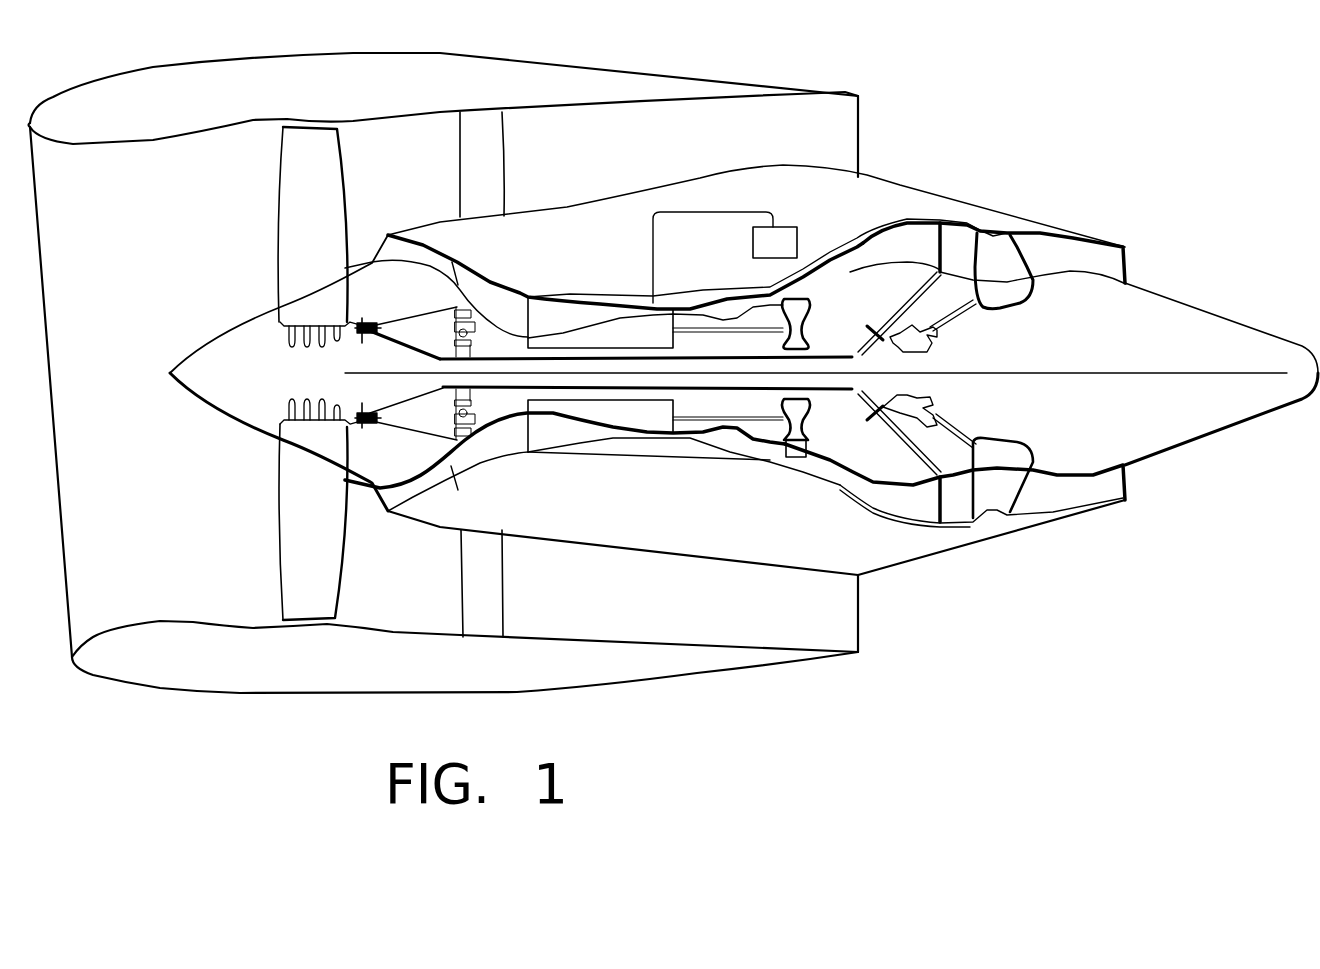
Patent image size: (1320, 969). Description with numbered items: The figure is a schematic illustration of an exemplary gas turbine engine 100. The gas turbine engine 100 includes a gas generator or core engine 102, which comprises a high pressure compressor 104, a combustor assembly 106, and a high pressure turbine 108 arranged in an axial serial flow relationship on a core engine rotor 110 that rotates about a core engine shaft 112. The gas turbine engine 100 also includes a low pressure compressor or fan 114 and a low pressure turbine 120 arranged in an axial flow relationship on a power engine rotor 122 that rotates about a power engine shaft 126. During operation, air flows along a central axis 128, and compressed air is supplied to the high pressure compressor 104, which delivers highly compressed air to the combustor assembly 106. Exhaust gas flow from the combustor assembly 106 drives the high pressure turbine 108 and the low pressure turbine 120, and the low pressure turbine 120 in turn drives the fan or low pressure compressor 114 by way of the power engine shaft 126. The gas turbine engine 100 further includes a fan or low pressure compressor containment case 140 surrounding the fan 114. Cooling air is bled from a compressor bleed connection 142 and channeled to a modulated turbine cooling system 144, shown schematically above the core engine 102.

The gas turbine engine 100 is at (808, 76).
The core engine 102 is at (692, 480).
The high pressure compressor 104 is at (552, 310).
The combustor assembly 106 is at (747, 307).
The high pressure turbine 108 is at (792, 462).
The core engine rotor 110 is at (890, 290).
The core engine shaft 112 is at (710, 329).
The fan 114 is at (294, 546).
The low pressure turbine 120 is at (895, 243).
The power engine rotor 122 is at (392, 338).
The power engine shaft 126 is at (572, 390).
The central axis 128 is at (1022, 375).
The fan or low pressure compressor containment case 140 is at (322, 80).
The compressor bleed connection 142 is at (652, 307).
The modulated turbine cooling system 144 is at (783, 227).